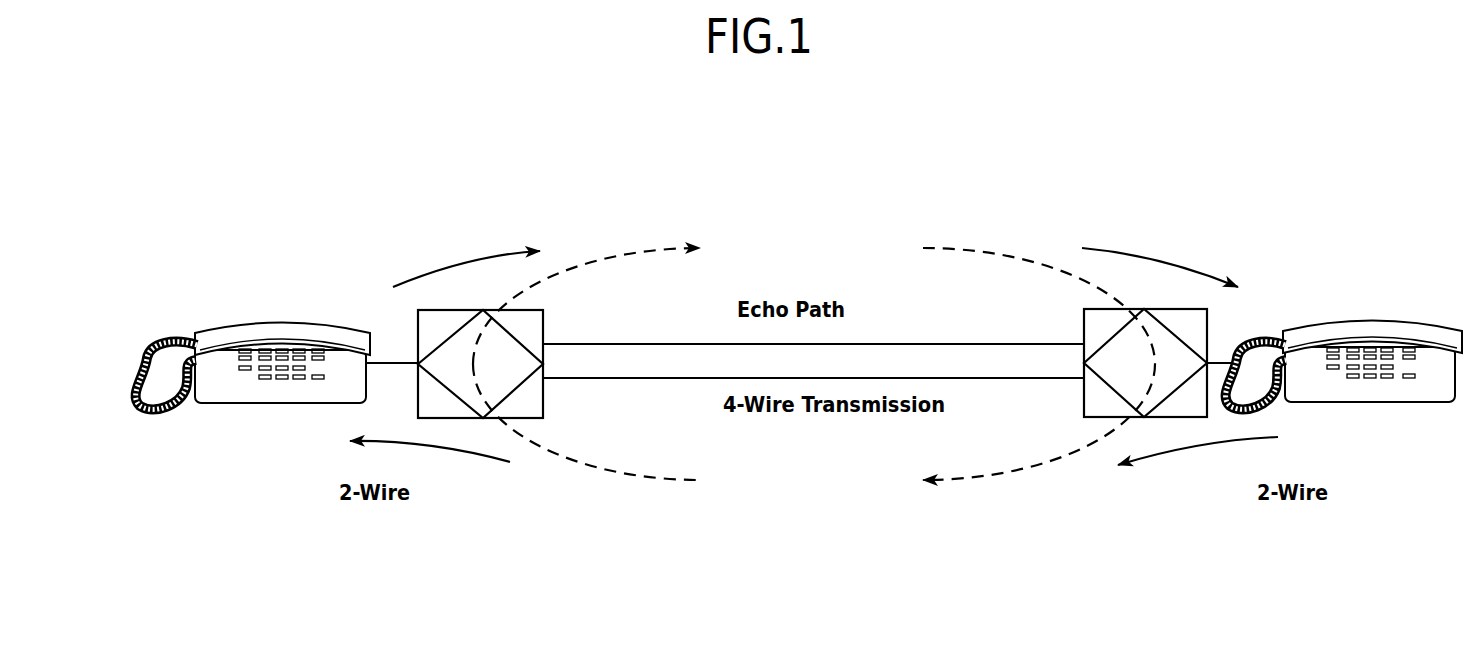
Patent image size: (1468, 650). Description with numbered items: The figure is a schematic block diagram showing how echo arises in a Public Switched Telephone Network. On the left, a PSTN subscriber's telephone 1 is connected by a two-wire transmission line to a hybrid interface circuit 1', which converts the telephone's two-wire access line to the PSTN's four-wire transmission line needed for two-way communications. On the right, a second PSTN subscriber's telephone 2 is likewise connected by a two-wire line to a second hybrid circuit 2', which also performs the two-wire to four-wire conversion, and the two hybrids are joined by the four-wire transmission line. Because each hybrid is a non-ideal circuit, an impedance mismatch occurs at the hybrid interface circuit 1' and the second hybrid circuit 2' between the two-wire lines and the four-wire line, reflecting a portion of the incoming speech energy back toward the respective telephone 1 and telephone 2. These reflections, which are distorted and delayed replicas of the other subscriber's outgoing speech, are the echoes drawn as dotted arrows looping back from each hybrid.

The hybrid interface circuit 1' is at (456, 323).
The second hybrid circuit 2' is at (1210, 332).
The PSTN subscriber's telephone 1 is at (253, 309).
The second PSTN subscriber's telephone 2 is at (1345, 298).